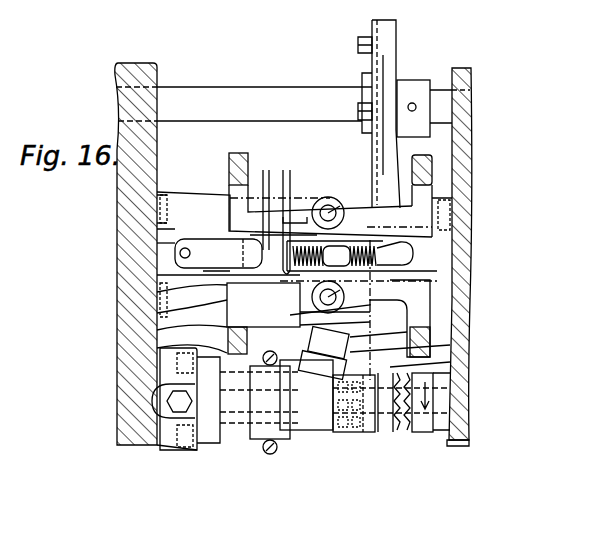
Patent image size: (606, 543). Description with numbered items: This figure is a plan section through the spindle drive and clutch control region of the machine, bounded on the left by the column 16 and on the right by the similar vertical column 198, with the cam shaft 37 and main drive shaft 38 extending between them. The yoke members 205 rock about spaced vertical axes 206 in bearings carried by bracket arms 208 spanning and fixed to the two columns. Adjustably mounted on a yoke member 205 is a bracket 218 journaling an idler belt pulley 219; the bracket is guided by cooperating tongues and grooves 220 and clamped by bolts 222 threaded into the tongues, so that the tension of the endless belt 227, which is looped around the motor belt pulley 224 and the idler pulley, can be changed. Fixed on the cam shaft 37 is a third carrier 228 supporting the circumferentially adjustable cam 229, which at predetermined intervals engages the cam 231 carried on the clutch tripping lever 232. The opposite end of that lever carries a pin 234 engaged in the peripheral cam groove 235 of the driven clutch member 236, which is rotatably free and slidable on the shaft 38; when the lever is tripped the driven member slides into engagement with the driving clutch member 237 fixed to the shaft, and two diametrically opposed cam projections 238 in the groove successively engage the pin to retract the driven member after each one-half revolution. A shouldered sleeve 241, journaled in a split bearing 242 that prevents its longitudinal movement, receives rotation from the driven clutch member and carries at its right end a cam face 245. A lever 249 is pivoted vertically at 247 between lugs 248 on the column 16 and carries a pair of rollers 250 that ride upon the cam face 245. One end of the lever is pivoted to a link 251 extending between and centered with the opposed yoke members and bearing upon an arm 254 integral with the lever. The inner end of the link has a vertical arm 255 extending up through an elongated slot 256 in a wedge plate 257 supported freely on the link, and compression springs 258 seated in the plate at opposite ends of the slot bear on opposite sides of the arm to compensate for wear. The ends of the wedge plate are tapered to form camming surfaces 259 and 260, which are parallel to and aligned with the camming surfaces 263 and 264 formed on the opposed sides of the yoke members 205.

The column 16 is at (128, 72).
The cam shaft 37 is at (202, 93).
The main drive shaft 38 is at (468, 433).
The vertical column 198 is at (462, 72).
The yoke members 205 is at (232, 158).
The vertical axes 206 is at (286, 240).
The bracket arms 208 is at (160, 195).
The bracket 218 is at (400, 338).
The idler belt pulley 219 is at (320, 373).
The tongues and grooves 220 is at (298, 375).
The bolts 222 is at (195, 352).
The belt pulley 224 is at (300, 308).
The endless belt 227 is at (180, 300).
The third carrier 228 is at (386, 45).
The cam 229 is at (374, 32).
The cam 231 is at (360, 100).
The clutch tripping lever 232 is at (381, 150).
The pin 234 is at (398, 440).
The peripheral cam groove 235 is at (466, 395).
The driven clutch member 236 is at (367, 430).
The driving clutch member 237 is at (468, 443).
The cam projections 238 is at (396, 432).
The shouldered sleeve 241 is at (293, 362).
The split bearing 242 is at (268, 455).
The cam face 245 is at (178, 450).
The pivot 247 is at (175, 402).
The lugs 248 is at (170, 378).
The lever 249 is at (170, 272).
The rollers 250 is at (203, 446).
The link 251 is at (157, 243).
The arm 254 is at (207, 237).
The vertical arm 255 is at (333, 255).
The elongated slot 256 is at (420, 285).
The wedge plate 257 is at (440, 260).
The compression springs 258 is at (420, 253).
The camming surface 259 is at (268, 245).
The camming surface 260 is at (425, 290).
The camming surface 263 is at (257, 287).
The camming surface 264 is at (440, 318).